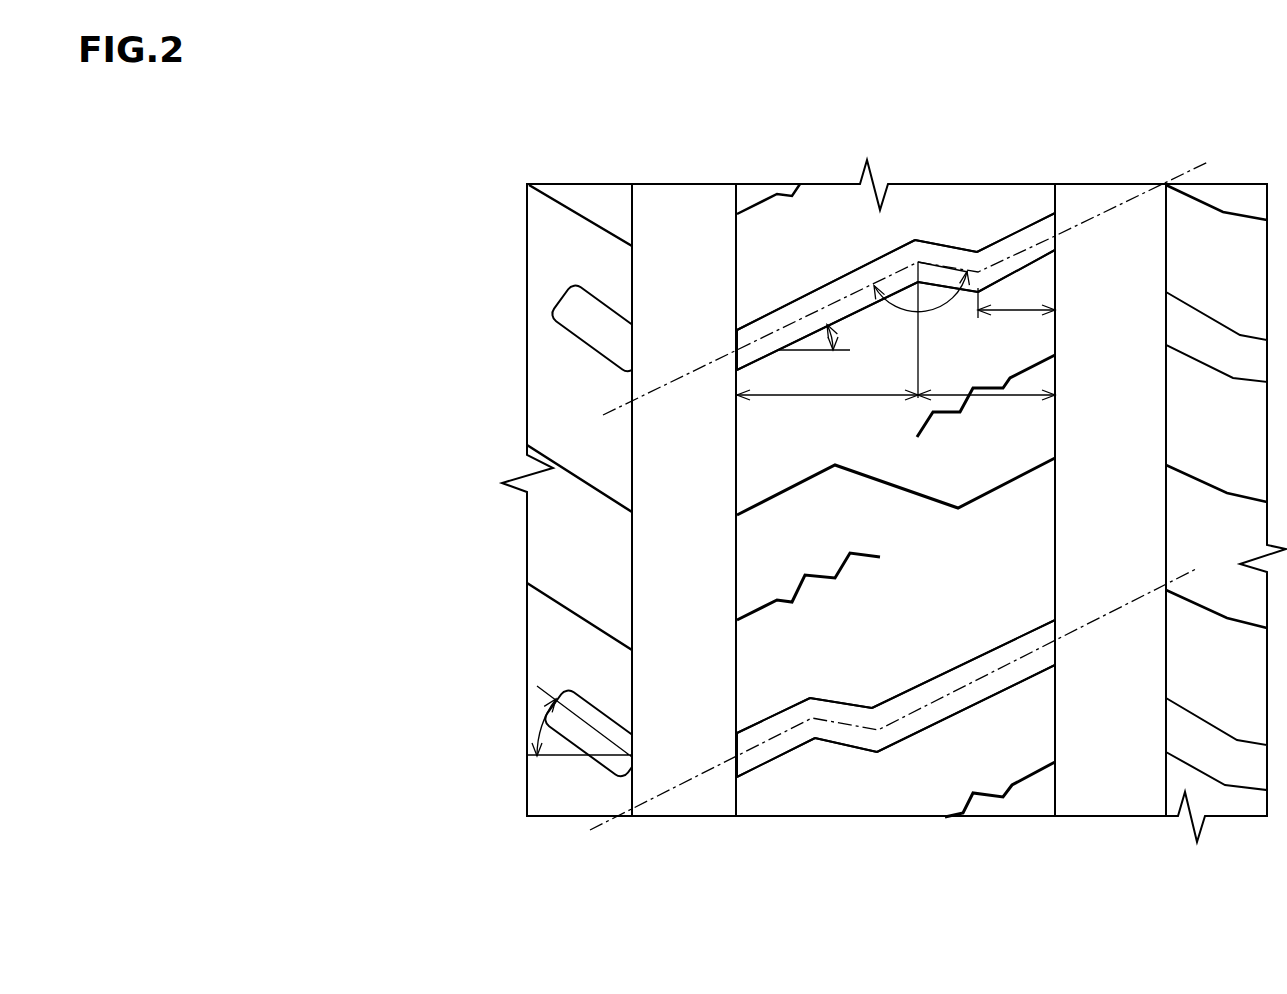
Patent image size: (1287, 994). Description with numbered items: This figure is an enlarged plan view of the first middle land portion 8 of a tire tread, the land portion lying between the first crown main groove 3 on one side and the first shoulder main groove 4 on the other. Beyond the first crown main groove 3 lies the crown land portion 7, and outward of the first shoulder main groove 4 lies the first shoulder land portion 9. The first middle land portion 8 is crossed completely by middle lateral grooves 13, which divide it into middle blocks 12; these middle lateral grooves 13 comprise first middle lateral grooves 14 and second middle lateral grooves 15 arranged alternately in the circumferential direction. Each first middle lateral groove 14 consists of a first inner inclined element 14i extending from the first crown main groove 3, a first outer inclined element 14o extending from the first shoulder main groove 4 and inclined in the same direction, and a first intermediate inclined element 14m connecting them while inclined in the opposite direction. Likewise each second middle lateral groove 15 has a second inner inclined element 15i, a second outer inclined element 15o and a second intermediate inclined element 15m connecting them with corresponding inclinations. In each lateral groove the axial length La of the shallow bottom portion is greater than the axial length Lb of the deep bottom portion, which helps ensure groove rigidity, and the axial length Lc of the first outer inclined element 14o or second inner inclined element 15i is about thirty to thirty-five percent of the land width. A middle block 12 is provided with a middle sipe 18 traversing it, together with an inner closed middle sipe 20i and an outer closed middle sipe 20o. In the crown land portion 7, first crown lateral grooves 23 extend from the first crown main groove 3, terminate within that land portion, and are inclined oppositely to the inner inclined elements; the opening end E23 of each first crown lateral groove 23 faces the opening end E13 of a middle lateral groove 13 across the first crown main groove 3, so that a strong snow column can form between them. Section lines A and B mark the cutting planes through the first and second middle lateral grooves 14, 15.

The first crown main groove 3 is at (683, 248).
The first shoulder main groove 4 is at (1105, 248).
The crown land portion 7 is at (548, 822).
The first middle land portion 8 is at (1000, 822).
The first shoulder land portion 9 is at (1232, 822).
The middle block 12 is at (868, 638).
The middle lateral groove 13 is at (896, 514).
The first middle lateral groove 14 is at (896, 223).
The first inner inclined element 14i is at (848, 285).
The first intermediate inclined element 14m is at (947, 250).
The first outer inclined element 14o is at (1015, 209).
The second middle lateral groove 15 is at (896, 785).
The second inner inclined element 15i is at (780, 742).
The second intermediate inclined element 15m is at (843, 730).
The second outer inclined element 15o is at (918, 713).
The middle sipe 18 is at (902, 490).
The inner closed middle sipe 20i is at (783, 601).
The outer closed middle sipe 20o is at (943, 413).
The first crown lateral groove 23 is at (593, 697).
The opening end of middle lateral groove E13 is at (743, 790).
The opening end of first crown lateral groove E23 is at (618, 789).
The length of shallow bottom portion La is at (827, 411).
The length of deep bottom portion Lb is at (986, 411).
The length of first outer inclined element or second inner inclined element Lc is at (1016, 318).
The section line A- A is at (906, 287).
The section line B- B is at (892, 703).